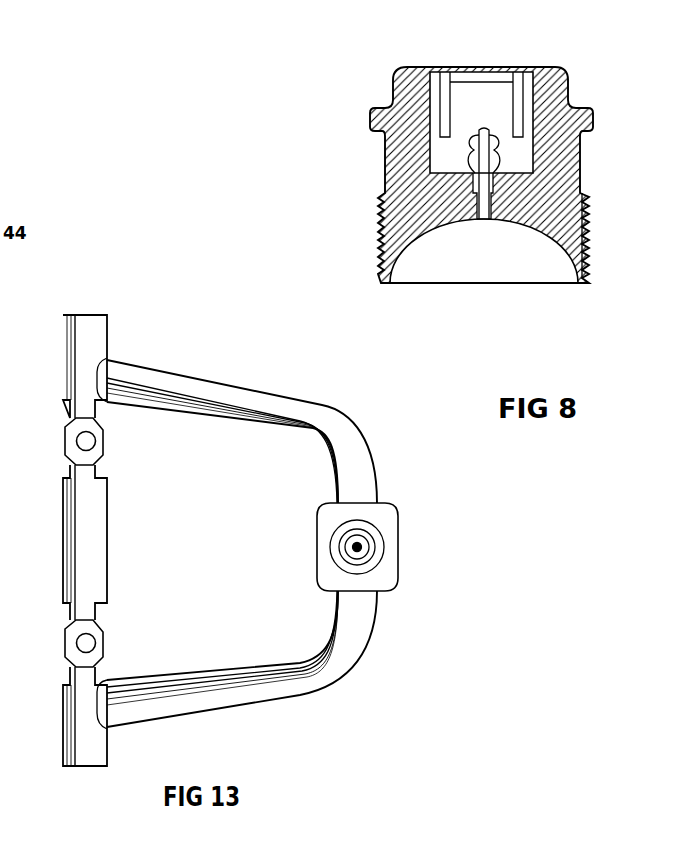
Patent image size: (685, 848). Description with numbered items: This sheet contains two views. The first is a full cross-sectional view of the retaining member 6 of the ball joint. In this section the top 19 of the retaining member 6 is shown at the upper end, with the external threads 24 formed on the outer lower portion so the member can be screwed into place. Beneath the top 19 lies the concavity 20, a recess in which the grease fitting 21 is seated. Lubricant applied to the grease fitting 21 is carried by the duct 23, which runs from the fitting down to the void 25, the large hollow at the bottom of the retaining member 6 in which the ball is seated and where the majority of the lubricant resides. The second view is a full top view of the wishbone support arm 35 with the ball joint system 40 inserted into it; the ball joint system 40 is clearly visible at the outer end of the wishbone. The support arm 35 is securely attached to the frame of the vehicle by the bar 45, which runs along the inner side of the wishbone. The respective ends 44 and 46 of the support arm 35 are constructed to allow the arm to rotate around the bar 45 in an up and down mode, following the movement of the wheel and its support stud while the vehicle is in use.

In FIG. 8, the retaining member 6 is at (585, 75).
In FIG. 8, the top 19 is at (410, 65).
In FIG. 8, the concavity 20 is at (443, 160).
In FIG. 8, the grease fitting 21 is at (487, 130).
In FIG. 8, the duct 23 is at (487, 219).
In FIG. 8, the external threads 24 is at (588, 243).
In FIG. 8, the void 25 is at (467, 240).
In FIG. 13, the wishbone support arm 35 is at (222, 347).
In FIG. 13, the ball joint system 40 is at (377, 510).
In FIG. 13, the end 44 is at (83, 315).
In FIG. 13, the bar 45 is at (103, 563).
In FIG. 13, the end 46 is at (80, 767).